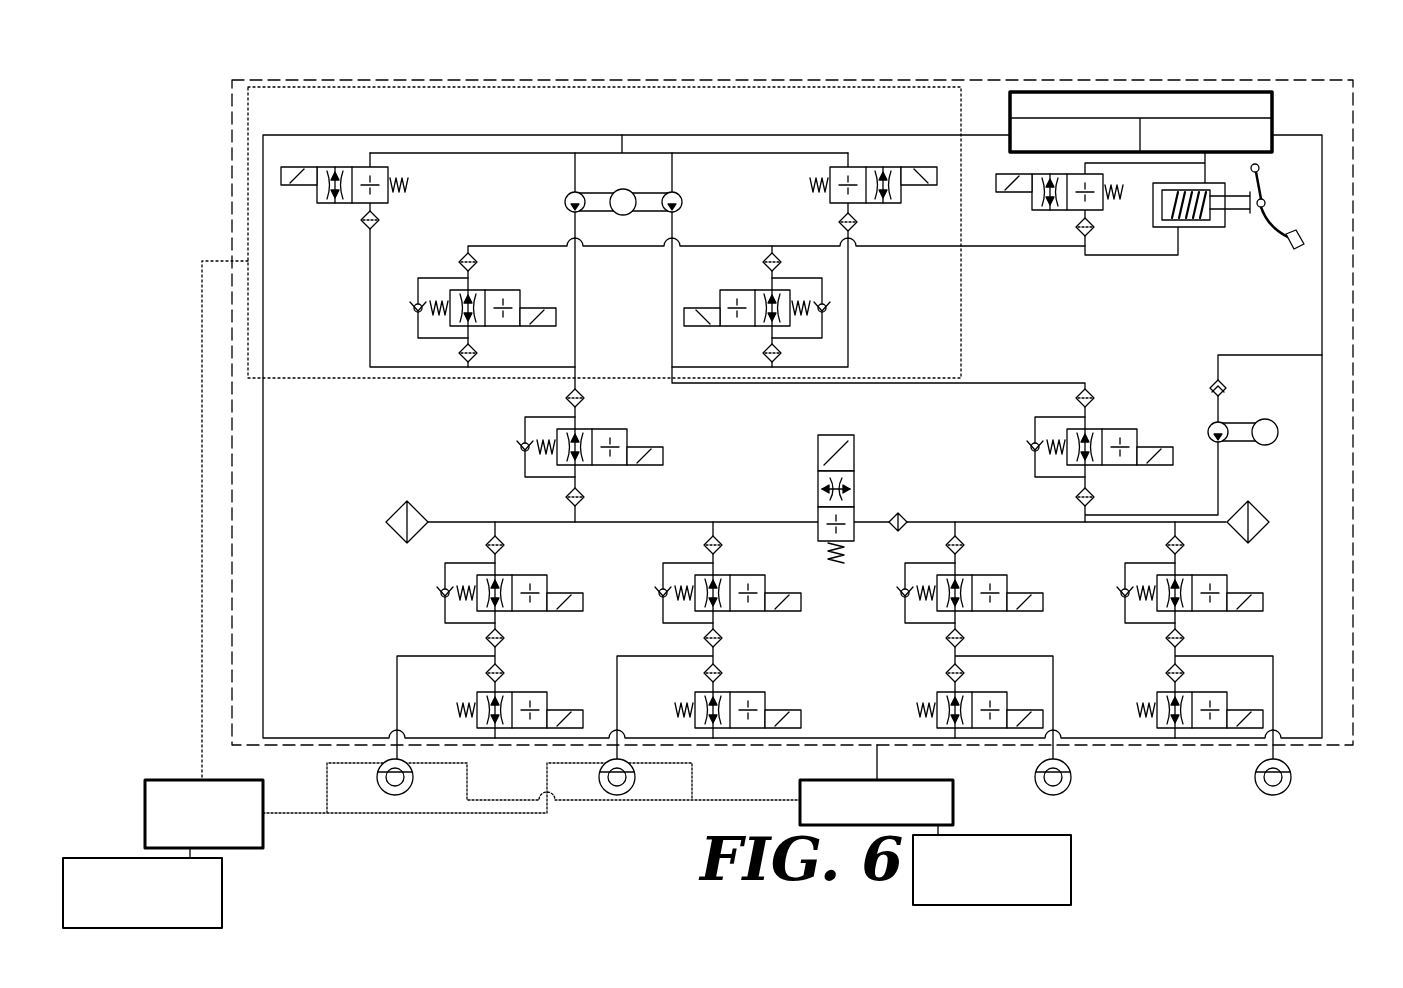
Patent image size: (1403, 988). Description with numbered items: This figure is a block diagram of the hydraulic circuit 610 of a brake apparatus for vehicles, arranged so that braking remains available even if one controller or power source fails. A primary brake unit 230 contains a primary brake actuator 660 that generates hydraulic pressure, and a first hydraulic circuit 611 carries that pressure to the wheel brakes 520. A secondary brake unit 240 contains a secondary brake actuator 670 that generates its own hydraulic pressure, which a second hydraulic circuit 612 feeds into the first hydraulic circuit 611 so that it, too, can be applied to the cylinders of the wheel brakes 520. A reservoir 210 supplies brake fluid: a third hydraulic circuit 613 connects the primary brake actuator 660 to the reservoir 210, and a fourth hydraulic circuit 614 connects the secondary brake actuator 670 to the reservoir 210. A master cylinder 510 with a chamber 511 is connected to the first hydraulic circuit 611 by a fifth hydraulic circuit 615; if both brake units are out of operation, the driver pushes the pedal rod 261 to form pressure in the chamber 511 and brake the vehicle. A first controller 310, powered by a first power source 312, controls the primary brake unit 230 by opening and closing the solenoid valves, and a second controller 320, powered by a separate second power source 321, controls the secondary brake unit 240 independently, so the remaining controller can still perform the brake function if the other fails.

The reservoir 210 is at (1277, 110).
The primary brake unit 230 is at (1168, 750).
The secondary brake unit 240 is at (340, 378).
The pedal rod 261 is at (1271, 212).
The first controller 310 is at (955, 803).
The first power source 312 is at (1050, 858).
The second controller 320 is at (187, 780).
The second power source 321 is at (106, 858).
The master cylinder 510 is at (1165, 228).
The chamber 511 is at (1204, 224).
The wheel brake 520 is at (1314, 824).
The hydraulic circuit 610 is at (1392, 52).
The first hydraulic circuit 611 is at (973, 522).
The second hydraulic circuit 612 is at (573, 277).
The third hydraulic circuit 613 is at (1327, 158).
The fourth hydraulic circuit 614 is at (700, 135).
The fifth hydraulic circuit 615 is at (955, 246).
The primary brake actuator 660 is at (1240, 420).
The secondary brake actuator 670 is at (652, 214).